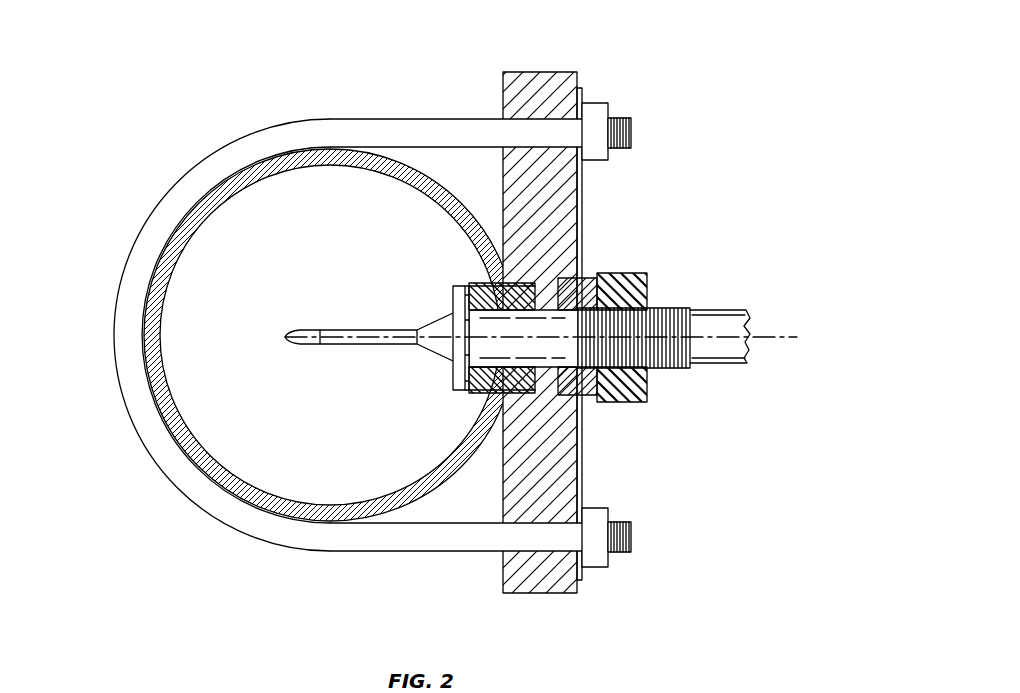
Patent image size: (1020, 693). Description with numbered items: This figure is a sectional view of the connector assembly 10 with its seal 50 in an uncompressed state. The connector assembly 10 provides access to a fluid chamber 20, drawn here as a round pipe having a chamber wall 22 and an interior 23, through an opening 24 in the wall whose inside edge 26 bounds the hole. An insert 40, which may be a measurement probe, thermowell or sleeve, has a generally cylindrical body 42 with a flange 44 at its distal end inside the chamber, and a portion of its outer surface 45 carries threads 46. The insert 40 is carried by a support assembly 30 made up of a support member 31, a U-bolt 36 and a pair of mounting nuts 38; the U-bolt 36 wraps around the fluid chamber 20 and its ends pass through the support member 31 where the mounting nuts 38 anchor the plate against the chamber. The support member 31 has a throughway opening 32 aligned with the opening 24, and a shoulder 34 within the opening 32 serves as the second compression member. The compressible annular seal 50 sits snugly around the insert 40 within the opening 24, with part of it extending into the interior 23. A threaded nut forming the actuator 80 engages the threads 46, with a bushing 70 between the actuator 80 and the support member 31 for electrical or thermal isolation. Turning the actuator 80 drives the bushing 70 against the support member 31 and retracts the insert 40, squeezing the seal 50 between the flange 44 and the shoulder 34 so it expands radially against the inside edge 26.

The connector assembly 10 is at (730, 218).
The fluid chamber 20 is at (286, 395).
The chamber wall 22 is at (176, 243).
The interior 23 is at (225, 337).
The opening 24 is at (495, 394).
The inside edge 26 is at (608, 540).
The support assembly 30 is at (598, 60).
The support member 31 is at (583, 190).
The opening 32 is at (548, 300).
The shoulder 34 is at (541, 369).
The U-bolt 36 is at (433, 127).
The mounting nuts 38 is at (594, 108).
The insert 40 is at (553, 333).
The body 42 is at (718, 367).
The flange 44 is at (452, 305).
The outer surface 45 is at (580, 400).
The threads 46 is at (658, 368).
The seal 50 is at (464, 283).
The bushing 70 is at (585, 279).
The actuator 80 is at (620, 276).